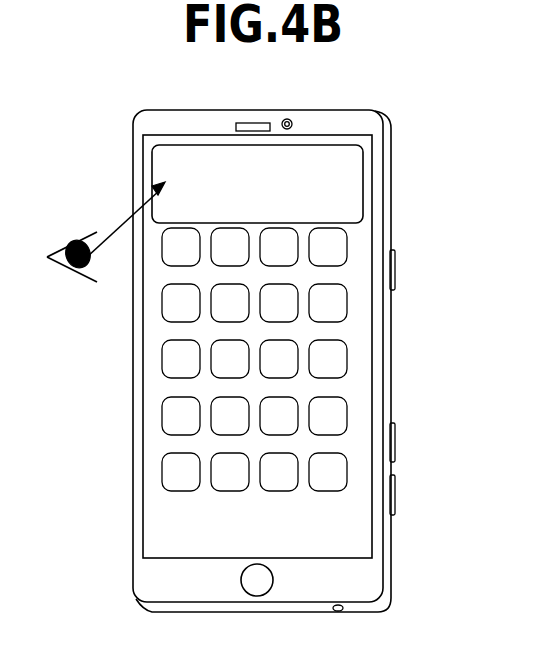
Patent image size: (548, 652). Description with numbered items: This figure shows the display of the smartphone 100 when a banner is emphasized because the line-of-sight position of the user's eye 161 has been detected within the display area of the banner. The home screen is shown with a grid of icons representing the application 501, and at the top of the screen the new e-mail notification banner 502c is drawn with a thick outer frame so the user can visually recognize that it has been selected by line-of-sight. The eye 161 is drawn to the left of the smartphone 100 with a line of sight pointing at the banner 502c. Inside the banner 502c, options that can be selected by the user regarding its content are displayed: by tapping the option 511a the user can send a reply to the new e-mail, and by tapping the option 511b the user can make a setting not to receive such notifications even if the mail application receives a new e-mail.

The smartphone 100 is at (366, 83).
The eye 161 is at (51, 255).
The application 501 is at (337, 303).
The banner 502c is at (364, 165).
The option 511a is at (185, 209).
The option 511b is at (327, 209).